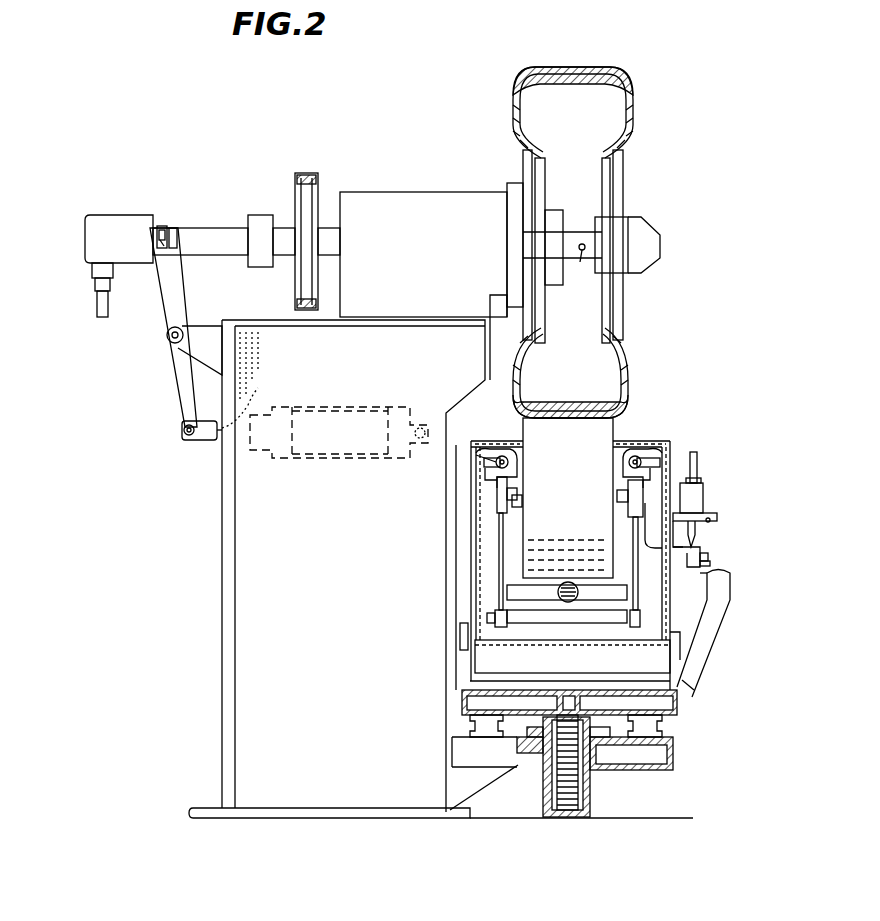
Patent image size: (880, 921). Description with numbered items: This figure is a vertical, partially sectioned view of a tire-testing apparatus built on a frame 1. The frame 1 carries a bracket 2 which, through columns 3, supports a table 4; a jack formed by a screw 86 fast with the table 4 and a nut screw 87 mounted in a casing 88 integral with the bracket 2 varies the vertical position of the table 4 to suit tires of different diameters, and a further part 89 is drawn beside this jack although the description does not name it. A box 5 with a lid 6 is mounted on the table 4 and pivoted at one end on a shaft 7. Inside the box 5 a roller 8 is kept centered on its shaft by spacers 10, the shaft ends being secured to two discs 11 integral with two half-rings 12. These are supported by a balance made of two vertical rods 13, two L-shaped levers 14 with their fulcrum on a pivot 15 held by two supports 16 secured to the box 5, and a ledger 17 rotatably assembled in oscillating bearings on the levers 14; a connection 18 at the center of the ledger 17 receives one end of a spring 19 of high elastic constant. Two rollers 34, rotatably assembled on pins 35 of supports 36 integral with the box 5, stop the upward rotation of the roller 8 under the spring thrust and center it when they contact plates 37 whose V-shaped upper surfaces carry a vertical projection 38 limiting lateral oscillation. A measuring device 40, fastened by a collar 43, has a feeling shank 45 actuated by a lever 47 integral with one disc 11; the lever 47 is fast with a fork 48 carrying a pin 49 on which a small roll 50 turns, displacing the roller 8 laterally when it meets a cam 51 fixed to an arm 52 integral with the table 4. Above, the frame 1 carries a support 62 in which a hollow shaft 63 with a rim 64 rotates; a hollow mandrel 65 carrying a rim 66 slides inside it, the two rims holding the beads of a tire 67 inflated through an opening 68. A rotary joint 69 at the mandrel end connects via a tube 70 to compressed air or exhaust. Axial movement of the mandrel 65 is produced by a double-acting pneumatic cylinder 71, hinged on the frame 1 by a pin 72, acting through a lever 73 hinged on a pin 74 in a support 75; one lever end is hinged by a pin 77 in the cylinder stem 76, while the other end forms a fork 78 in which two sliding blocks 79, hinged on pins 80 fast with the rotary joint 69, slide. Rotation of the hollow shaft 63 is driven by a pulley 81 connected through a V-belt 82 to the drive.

The frame 1 is at (290, 689).
The bracket 2 is at (677, 765).
The columns 3 is at (662, 727).
The table 4 is at (677, 704).
The box 5 is at (476, 590).
The lid 6 is at (618, 441).
The shaft 7 is at (682, 655).
The roller 8 is at (559, 476).
The spacers 10 is at (521, 507).
The discs 11 is at (497, 505).
The half-rings 12 is at (517, 494).
The vertical rods 13 is at (499, 540).
The L-shaped levers 14 is at (501, 627).
The pivot 15 is at (524, 600).
The supports 16 is at (657, 640).
The ledger 17 is at (487, 618).
The connection 18 is at (571, 623).
The spring 19 is at (562, 602).
The rollers 34 is at (490, 450).
The pins 35 is at (478, 450).
The supports 36 is at (486, 462).
The plates 37 is at (488, 472).
The vertical projection 38 is at (505, 456).
The measuring device 40 is at (703, 490).
The collar 43 is at (717, 517).
The feeling shank 45 is at (697, 535).
The lever 47 is at (695, 567).
The fork 48 is at (705, 580).
The pin 49 is at (708, 557).
The small roll 50 is at (712, 564).
The cam 51 is at (715, 590).
The arm 52 is at (710, 655).
The support 62 is at (462, 192).
The hollow shaft 63 is at (553, 210).
The rim 64 is at (538, 188).
The hollow mandrel 65 is at (623, 273).
The rim 66 is at (610, 185).
The tire 67 is at (628, 382).
The opening 68 is at (582, 262).
The rotary joint 69 is at (110, 215).
The tube 70 is at (97, 300).
The double-acting pneumatic cylinder 71 is at (357, 410).
The pin 72 is at (426, 428).
The lever 73 is at (176, 378).
The pin 74 is at (167, 336).
The support 75 is at (203, 326).
The stem 76 is at (248, 397).
The pin 77 is at (182, 431).
The fork 78 is at (160, 226).
The sliding blocks 79 is at (165, 228).
The pins 80 is at (178, 230).
The pulley 81 is at (318, 200).
The V-belt 82 is at (307, 178).
The screw 86 is at (578, 785).
The nut screw 87 is at (543, 760).
The casing 88 is at (527, 736).
The nut 89 is at (605, 740).